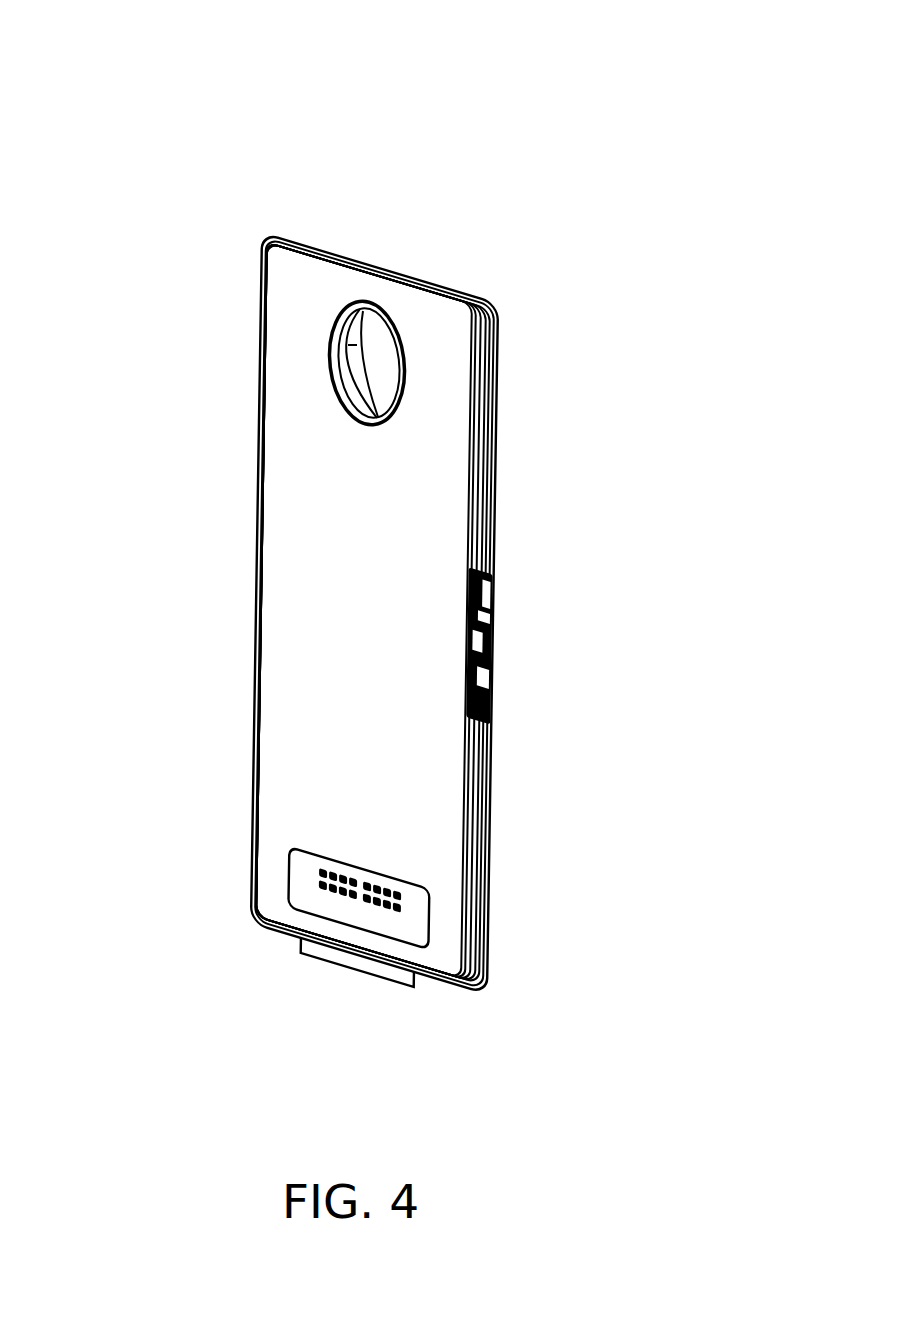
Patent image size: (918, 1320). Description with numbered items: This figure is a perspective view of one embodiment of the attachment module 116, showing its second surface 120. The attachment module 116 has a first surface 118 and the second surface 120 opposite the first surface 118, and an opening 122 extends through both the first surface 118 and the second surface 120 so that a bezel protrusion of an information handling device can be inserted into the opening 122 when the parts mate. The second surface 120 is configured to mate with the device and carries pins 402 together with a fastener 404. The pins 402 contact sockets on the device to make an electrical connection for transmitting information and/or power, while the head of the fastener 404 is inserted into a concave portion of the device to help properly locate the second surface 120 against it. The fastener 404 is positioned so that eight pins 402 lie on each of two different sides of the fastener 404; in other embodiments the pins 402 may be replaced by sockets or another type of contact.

The attachment module 116 is at (94, 78).
The first surface 118 is at (511, 309).
The second surface 120 is at (443, 790).
The opening 122 is at (383, 372).
The pins 402 is at (310, 887).
The fastener 404 is at (353, 897).